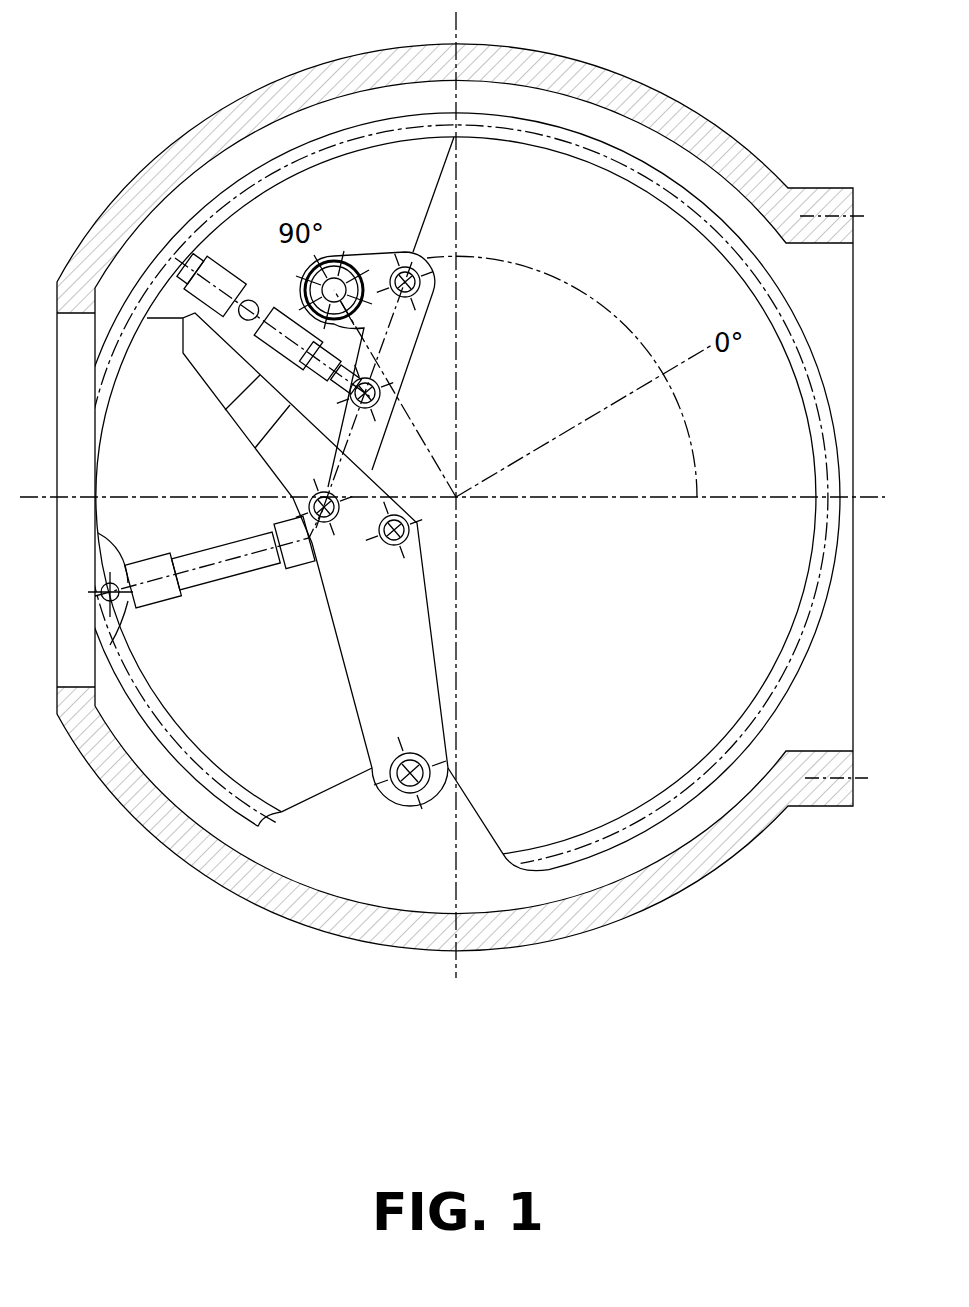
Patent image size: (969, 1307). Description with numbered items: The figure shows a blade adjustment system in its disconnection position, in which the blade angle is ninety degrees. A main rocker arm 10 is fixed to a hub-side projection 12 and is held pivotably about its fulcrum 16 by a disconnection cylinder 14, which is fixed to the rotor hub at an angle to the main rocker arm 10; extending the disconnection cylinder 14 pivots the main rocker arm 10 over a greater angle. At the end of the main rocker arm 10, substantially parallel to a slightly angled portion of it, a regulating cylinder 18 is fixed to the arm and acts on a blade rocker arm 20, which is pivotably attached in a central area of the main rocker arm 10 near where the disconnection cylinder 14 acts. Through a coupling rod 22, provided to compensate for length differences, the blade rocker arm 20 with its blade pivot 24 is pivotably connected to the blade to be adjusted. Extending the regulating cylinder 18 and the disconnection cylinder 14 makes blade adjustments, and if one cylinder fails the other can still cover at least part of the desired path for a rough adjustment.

The main rocker arm 10 is at (407, 593).
The hub-side projection 12 is at (473, 838).
The disconnection cylinder 14 is at (226, 577).
The fulcrum 16 is at (412, 755).
The regulating cylinder 18 is at (222, 263).
The blade rocker arm 20 is at (397, 330).
The coupling rod 22 is at (372, 258).
The blade pivot 24 is at (333, 262).